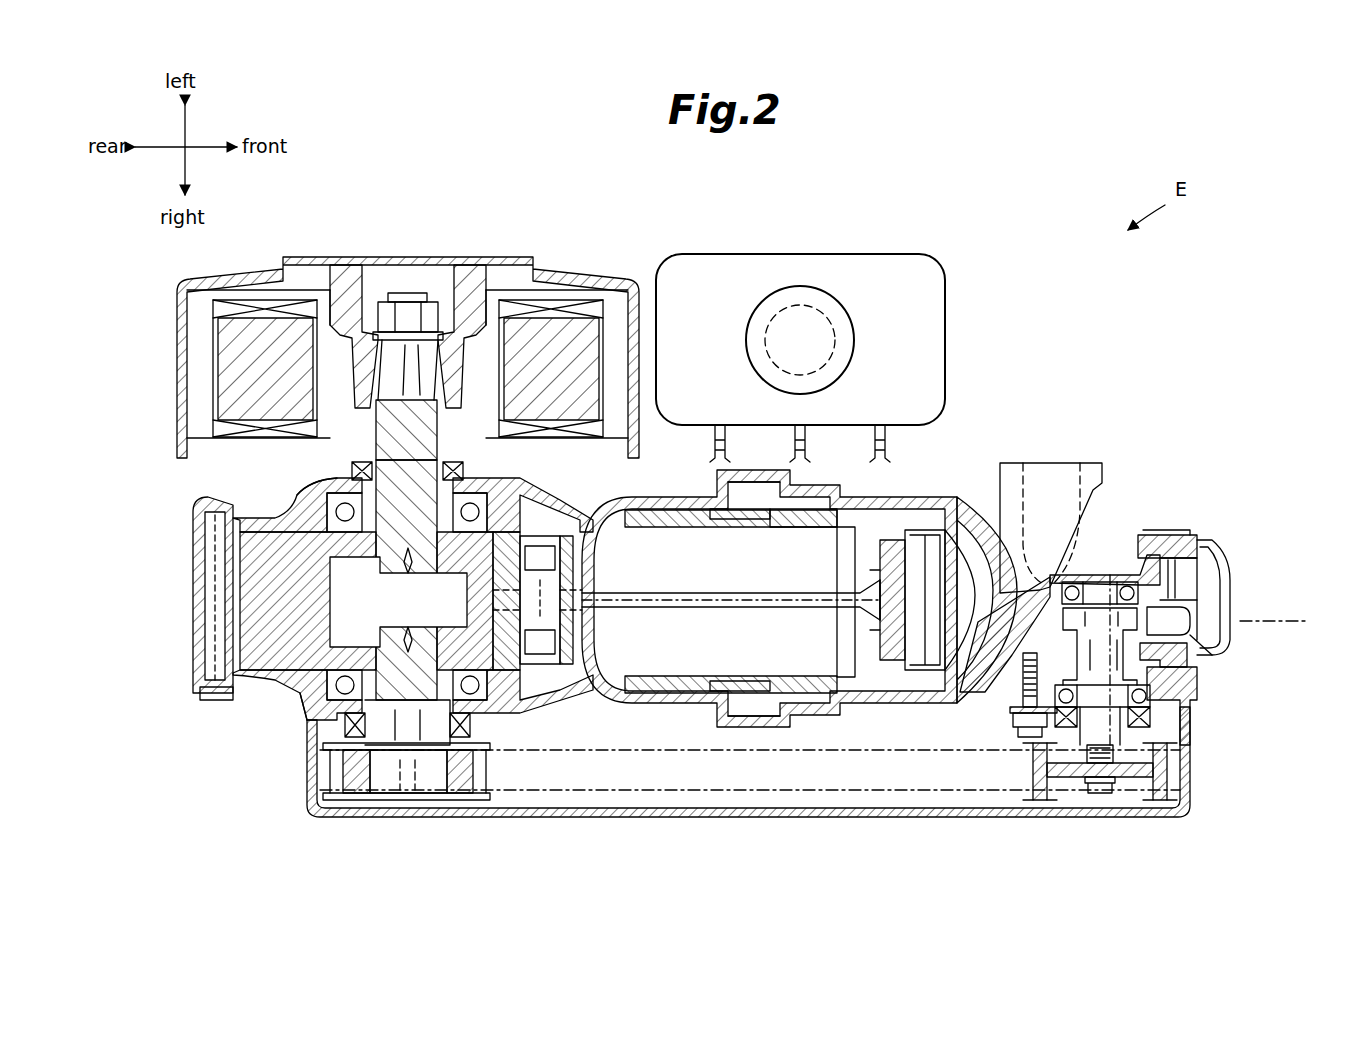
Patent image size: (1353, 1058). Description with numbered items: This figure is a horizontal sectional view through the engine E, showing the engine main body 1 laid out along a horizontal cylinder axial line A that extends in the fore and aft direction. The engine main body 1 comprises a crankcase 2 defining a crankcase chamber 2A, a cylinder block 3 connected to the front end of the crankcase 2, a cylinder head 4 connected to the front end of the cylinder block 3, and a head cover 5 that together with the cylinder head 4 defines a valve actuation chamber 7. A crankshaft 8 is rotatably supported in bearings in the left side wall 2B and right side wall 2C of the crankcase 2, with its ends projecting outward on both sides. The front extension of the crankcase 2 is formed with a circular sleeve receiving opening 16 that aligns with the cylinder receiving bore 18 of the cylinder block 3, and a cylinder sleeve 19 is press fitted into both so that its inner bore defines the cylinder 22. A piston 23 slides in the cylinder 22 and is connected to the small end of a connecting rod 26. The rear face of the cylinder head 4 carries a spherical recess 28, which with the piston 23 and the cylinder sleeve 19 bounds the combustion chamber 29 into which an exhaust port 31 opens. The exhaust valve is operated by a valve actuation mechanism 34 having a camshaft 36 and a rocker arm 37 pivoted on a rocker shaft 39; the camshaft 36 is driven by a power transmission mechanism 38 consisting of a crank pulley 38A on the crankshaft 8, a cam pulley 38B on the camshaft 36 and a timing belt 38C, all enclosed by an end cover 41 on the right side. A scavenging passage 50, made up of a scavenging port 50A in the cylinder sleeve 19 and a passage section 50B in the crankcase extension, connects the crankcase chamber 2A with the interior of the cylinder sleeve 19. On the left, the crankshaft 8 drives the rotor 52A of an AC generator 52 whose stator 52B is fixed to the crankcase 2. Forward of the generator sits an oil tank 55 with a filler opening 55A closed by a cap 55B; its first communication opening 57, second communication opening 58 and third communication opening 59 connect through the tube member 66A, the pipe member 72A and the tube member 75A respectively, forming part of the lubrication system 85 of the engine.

The engine main body 1 is at (1186, 822).
The crankcase 2 is at (192, 626).
The crankcase chamber 2A is at (366, 580).
The left side wall 2B is at (322, 486).
The right side wall 2C is at (305, 698).
The cylinder block 3 is at (897, 503).
The cylinder head 4 is at (960, 513).
The head cover 5 is at (1232, 575).
The valve actuation chamber 7 is at (1184, 617).
The crankshaft 8 is at (450, 445).
The sleeve receiving opening 16 is at (782, 512).
The cylinder receiving bore 18 is at (826, 515).
The cylinder sleeve 19 is at (660, 688).
The cylinder 22 is at (660, 524).
The piston 23 is at (878, 690).
The connecting rod 26 is at (800, 607).
The spherical recess 28 is at (960, 540).
The combustion chamber 29 is at (985, 665).
The exhaust port 31 is at (1068, 465).
The valve actuation mechanism 34 is at (1222, 563).
The camshaft 36 is at (1160, 658).
The rocker arm 37 is at (1215, 633).
The power transmission mechanism 38 is at (1075, 808).
The crank pulley 38A is at (455, 800).
The cam pulley 38B is at (1035, 800).
The timing belt 38C is at (690, 808).
The rocker shaft 39 is at (1163, 560).
The end cover 41 is at (870, 818).
The scavenging passage 50 is at (753, 492).
The scavenging port 50A is at (722, 513).
The passage section 50B is at (718, 480).
The AC generator 52 is at (471, 255).
The rotor 52A is at (568, 278).
The stator 52B is at (257, 305).
The oil tank 55 is at (880, 253).
The filler opening 55A is at (805, 305).
The cap 55B is at (846, 328).
The first communication opening 57 is at (875, 428).
The second communication opening 58 is at (795, 428).
The third communication opening 59 is at (718, 428).
The tube member 66A is at (886, 448).
The pipe member 72A is at (806, 448).
The tube member 75A is at (728, 448).
The lubrication system 85 is at (957, 290).
The cylinder axial line A is at (1284, 621).